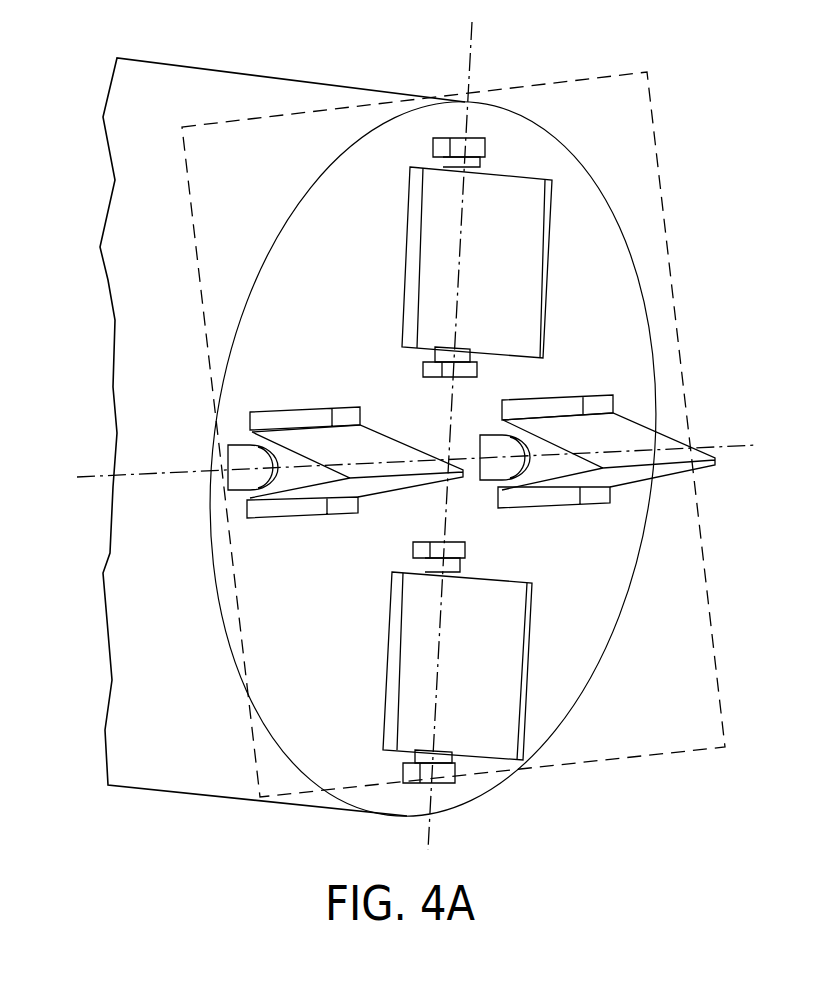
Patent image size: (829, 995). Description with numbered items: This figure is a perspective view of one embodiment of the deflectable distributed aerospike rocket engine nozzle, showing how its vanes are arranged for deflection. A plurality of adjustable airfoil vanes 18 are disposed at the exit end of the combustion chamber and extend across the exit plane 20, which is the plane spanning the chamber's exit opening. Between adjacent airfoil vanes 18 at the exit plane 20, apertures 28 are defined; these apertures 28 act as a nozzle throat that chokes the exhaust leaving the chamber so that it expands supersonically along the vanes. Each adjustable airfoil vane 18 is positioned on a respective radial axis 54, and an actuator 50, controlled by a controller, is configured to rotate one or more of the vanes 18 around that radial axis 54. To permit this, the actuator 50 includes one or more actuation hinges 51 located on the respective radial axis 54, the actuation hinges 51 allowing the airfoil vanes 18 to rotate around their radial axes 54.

The adjustable airfoil vane 18 is at (303, 478).
The exit plane 20 is at (649, 758).
The aperture 28 is at (272, 412).
The actuator 50 is at (233, 505).
The actuation hinge 51 is at (243, 478).
The radial axis 54 is at (470, 42).